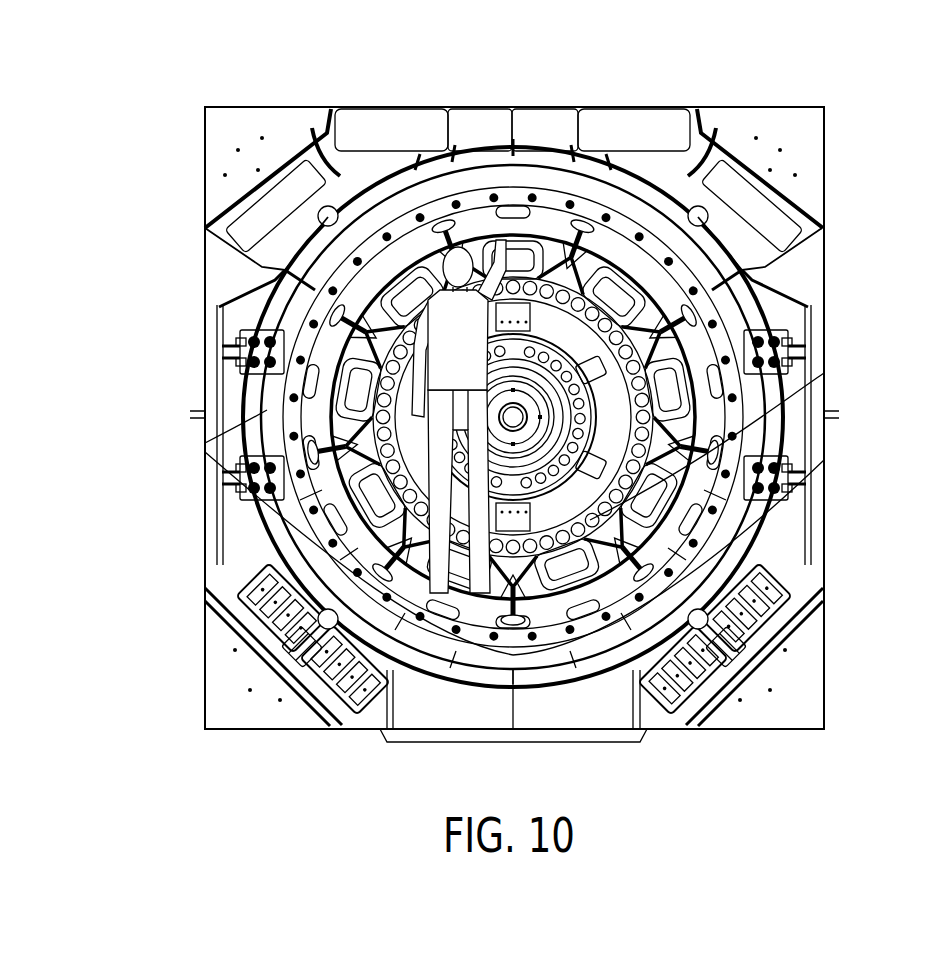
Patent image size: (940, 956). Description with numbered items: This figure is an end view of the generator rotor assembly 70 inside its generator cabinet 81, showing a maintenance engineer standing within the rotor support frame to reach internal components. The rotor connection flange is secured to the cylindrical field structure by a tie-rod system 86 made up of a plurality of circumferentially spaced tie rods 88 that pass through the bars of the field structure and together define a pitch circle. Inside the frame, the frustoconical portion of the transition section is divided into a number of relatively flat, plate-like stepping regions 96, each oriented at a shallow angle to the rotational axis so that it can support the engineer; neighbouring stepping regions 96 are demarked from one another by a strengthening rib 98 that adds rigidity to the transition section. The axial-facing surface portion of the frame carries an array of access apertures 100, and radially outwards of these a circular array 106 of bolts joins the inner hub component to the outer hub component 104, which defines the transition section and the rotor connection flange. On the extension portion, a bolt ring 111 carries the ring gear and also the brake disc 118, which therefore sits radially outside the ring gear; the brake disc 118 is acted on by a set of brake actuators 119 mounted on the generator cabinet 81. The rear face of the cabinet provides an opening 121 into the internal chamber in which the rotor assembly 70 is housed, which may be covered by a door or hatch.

The generator rotor assembly 70 is at (367, 180).
The tie-rod system 86 is at (456, 192).
The tie rods 88 is at (531, 196).
The strengthening rib 98 is at (668, 305).
The generator cabinet 81 is at (783, 112).
The opening 121 is at (283, 268).
The brake actuators 119 is at (240, 345).
The brake disc 118 is at (265, 418).
The bolt ring 111 is at (305, 542).
The circular array of bolts 106 is at (690, 368).
The outer hub component 104 is at (682, 383).
The access apertures 100 is at (705, 425).
The stepping regions 96 is at (585, 600).